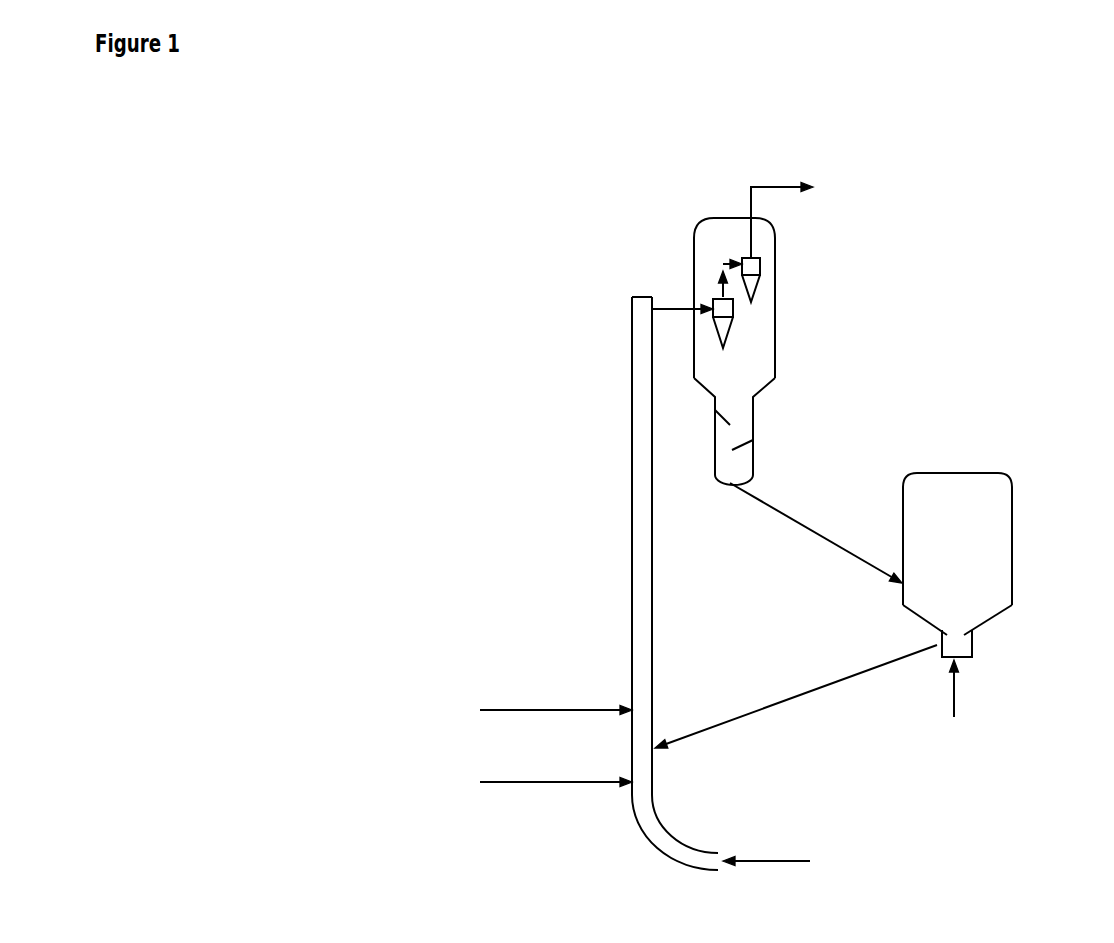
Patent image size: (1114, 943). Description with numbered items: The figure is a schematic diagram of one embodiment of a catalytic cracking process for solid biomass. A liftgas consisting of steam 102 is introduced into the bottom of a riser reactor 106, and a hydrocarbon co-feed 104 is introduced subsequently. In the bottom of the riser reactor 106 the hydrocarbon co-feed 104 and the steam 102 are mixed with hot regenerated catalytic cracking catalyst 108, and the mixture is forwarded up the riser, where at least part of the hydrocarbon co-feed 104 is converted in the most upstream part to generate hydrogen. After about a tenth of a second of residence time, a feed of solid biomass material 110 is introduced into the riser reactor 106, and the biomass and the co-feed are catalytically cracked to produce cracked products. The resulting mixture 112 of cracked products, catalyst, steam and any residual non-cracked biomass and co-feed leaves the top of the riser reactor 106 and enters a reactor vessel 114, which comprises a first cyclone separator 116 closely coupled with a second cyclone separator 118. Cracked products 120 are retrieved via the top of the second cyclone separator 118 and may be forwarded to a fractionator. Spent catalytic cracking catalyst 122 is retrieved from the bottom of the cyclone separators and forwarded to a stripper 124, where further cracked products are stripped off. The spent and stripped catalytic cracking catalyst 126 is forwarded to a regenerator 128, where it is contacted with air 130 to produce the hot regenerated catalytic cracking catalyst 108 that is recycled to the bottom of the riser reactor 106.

The steam liftgas 102 is at (765, 863).
The hydrocarbon co-feed 104 is at (580, 783).
The riser reactor 106 is at (652, 612).
The hot regenerated catalytic cracking catalyst 108 is at (812, 690).
The solid biomass material feed 110 is at (510, 707).
The mixture of cracked products, catalyst, steam and residual feed 112 is at (675, 308).
The reactor vessel 114 is at (772, 318).
The first cyclone separator 116 is at (723, 328).
The second cyclone separator 118 is at (757, 272).
The cracked products 120 is at (772, 188).
The spent catalytic cracking catalyst 122 is at (720, 355).
The stripper 124 is at (753, 413).
The spent and stripped catalytic cracking catalyst 126 is at (828, 545).
The regenerator 128 is at (1012, 550).
The air 130 is at (958, 690).